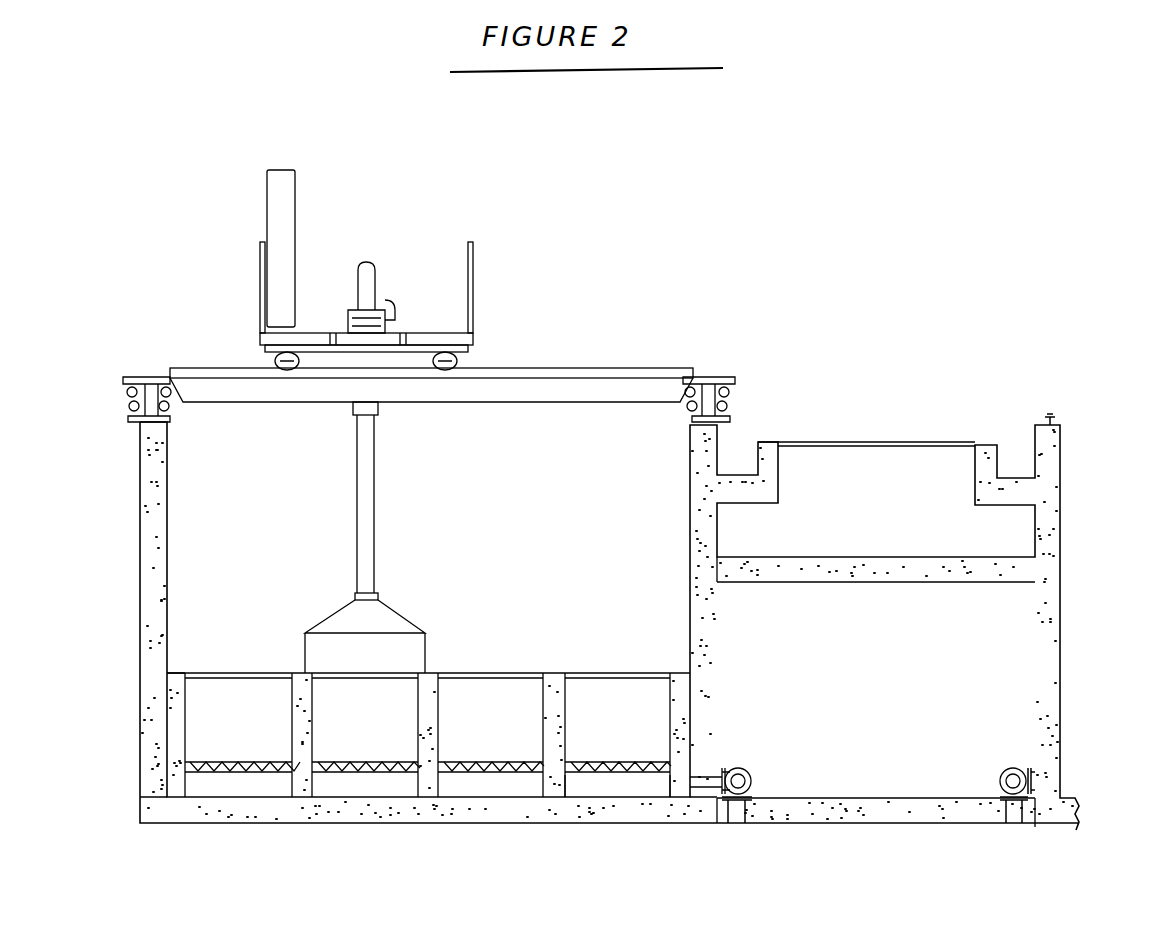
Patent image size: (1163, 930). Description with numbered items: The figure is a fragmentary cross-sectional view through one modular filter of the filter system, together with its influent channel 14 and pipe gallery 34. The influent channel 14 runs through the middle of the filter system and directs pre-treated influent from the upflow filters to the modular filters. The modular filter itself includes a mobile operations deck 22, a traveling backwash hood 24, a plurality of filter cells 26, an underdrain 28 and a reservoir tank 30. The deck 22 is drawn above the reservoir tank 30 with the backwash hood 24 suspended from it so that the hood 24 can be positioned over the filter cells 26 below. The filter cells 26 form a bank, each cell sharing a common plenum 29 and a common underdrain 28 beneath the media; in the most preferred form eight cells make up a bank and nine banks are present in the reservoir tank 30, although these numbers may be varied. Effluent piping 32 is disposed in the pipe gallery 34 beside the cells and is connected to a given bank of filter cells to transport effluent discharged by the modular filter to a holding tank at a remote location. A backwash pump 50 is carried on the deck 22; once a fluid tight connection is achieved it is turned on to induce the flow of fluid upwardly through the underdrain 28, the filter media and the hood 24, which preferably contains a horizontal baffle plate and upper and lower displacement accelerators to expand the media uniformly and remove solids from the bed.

The influent channel 14 is at (995, 535).
The mobile operations deck 22 is at (473, 333).
The traveling backwash hood 24 is at (377, 493).
The filter cells 26 is at (622, 702).
The underdrain 28 is at (647, 762).
The common plenum 29 is at (641, 785).
The reservoir tank 30 is at (305, 810).
The effluent piping 32 is at (750, 780).
The pipe gallery 34 is at (900, 686).
The backwash pump 50 is at (390, 254).